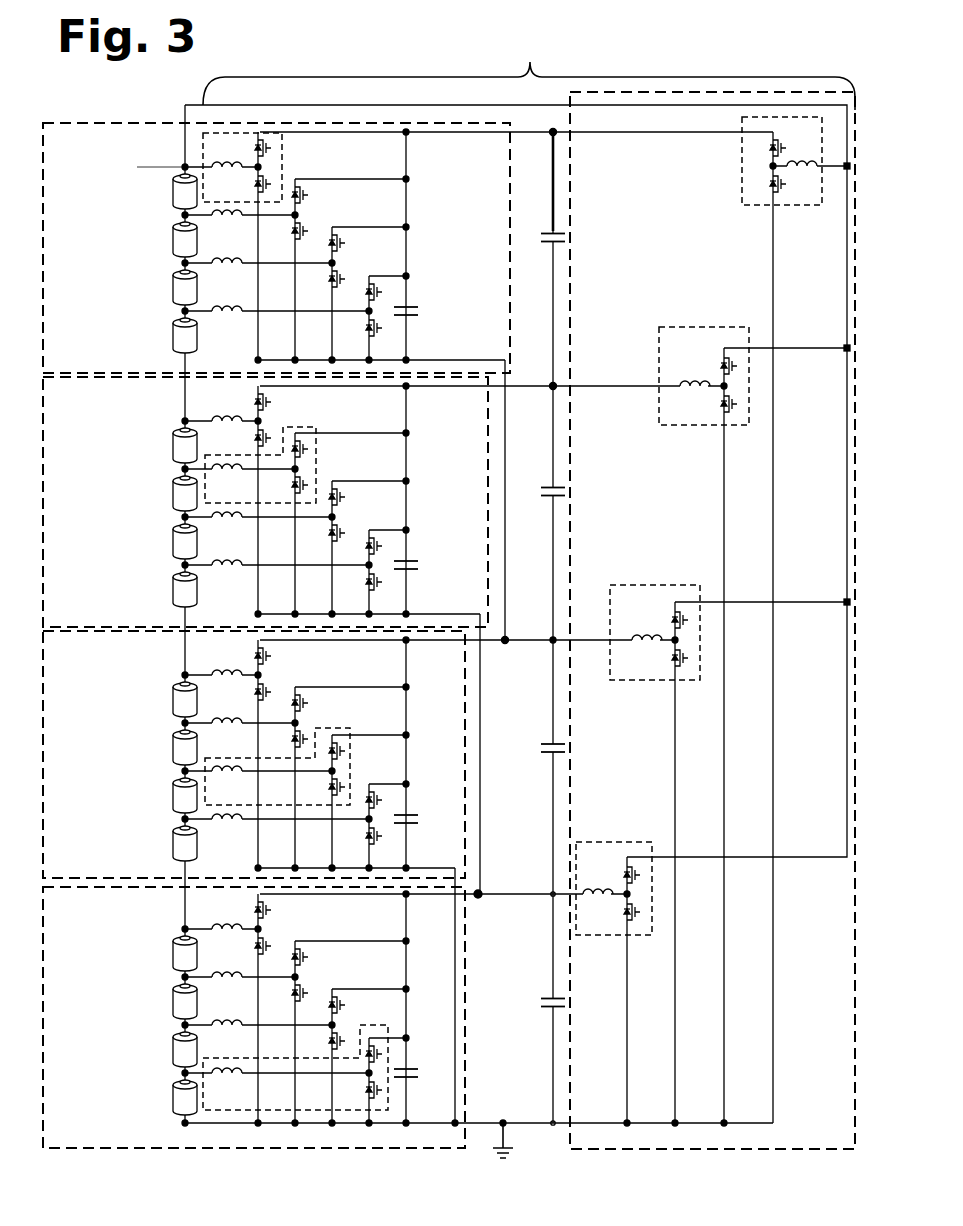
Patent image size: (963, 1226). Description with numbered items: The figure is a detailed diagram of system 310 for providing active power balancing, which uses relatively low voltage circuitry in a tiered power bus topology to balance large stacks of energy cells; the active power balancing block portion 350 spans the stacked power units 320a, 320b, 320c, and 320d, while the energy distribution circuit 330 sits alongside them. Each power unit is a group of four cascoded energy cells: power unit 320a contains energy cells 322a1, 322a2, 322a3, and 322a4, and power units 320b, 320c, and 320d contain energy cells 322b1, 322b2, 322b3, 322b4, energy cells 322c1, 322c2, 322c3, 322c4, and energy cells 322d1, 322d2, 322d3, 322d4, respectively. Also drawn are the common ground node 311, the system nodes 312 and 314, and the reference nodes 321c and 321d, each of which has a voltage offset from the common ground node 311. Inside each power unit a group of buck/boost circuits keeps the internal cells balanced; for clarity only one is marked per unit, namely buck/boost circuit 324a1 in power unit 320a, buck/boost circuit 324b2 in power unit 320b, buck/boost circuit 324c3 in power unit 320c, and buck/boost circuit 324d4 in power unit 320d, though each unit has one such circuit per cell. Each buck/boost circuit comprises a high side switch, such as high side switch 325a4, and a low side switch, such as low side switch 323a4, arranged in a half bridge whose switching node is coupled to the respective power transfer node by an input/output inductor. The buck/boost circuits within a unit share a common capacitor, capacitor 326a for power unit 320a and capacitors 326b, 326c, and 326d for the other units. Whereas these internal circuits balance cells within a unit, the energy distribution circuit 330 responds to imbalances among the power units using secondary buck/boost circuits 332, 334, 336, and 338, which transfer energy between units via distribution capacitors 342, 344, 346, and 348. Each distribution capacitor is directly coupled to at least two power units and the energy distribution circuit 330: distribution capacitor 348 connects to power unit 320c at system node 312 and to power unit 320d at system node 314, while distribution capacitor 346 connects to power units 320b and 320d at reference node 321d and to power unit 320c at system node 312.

The system 310 is at (828, 54).
The active power balancing block portion 350 is at (529, 72).
The energy distribution circuit 330 is at (712, 620).
The common ground node 311 is at (503, 1121).
The system node 312 is at (553, 388).
The system node 314 is at (553, 134).
The power unit 320a is at (254, 1017).
The power unit 320b is at (254, 754).
The power unit 320c is at (265, 502).
The power unit 320d is at (276, 248).
The reference node 321c is at (478, 891).
The reference node 321d is at (505, 643).
The energy cell 322a1 is at (172, 1098).
The energy cell 322a2 is at (172, 1050).
The energy cell 322a3 is at (172, 1002).
The energy cell 322a4 is at (172, 954).
The energy cell 322b1 is at (172, 844).
The energy cell 322b2 is at (172, 796).
The energy cell 322b3 is at (172, 748).
The energy cell 322b4 is at (172, 700).
The energy cell 322c1 is at (172, 590).
The energy cell 322c2 is at (172, 542).
The energy cell 322c3 is at (172, 494).
The energy cell 322c4 is at (172, 446).
The energy cell 322d1 is at (172, 336).
The energy cell 322d2 is at (172, 288).
The energy cell 322d3 is at (172, 240).
The energy cell 322d4 is at (172, 192).
The low side switch 323a4 is at (286, 940).
The buck/boost circuit 324a1 is at (218, 1047).
The buck/boost circuit 324b2 is at (358, 718).
The buck/boost circuit 324c3 is at (308, 416).
The buck/boost circuit 324d4 is at (282, 150).
The high side switch 325a4 is at (244, 913).
The capacitor 326a is at (409, 1080).
The capacitor 326b is at (409, 826).
The capacitor 326c is at (409, 572).
The capacitor 326d is at (409, 318).
The secondary buck/boost circuit 332 is at (605, 841).
The secondary buck/boost circuit 334 is at (645, 584).
The secondary buck/boost circuit 336 is at (672, 426).
The secondary buck/boost circuit 338 is at (810, 206).
The distribution capacitor 342 is at (553, 998).
The distribution capacitor 344 is at (553, 744).
The distribution capacitor 346 is at (553, 496).
The distribution capacitor 348 is at (553, 243).